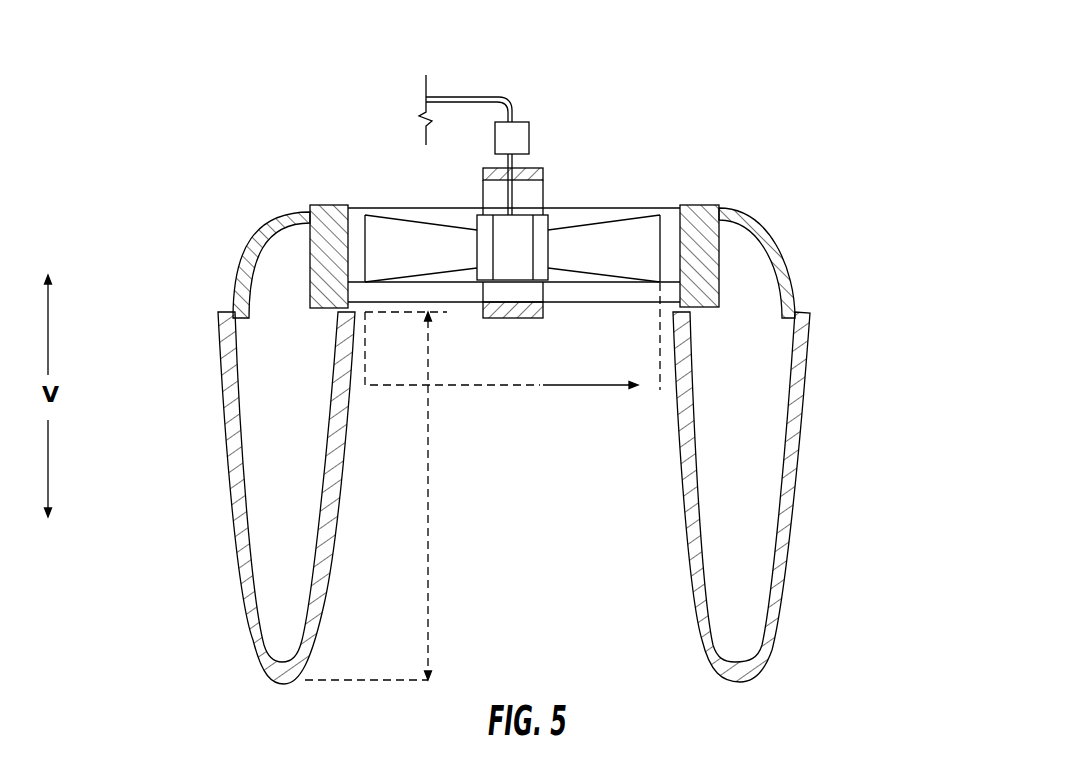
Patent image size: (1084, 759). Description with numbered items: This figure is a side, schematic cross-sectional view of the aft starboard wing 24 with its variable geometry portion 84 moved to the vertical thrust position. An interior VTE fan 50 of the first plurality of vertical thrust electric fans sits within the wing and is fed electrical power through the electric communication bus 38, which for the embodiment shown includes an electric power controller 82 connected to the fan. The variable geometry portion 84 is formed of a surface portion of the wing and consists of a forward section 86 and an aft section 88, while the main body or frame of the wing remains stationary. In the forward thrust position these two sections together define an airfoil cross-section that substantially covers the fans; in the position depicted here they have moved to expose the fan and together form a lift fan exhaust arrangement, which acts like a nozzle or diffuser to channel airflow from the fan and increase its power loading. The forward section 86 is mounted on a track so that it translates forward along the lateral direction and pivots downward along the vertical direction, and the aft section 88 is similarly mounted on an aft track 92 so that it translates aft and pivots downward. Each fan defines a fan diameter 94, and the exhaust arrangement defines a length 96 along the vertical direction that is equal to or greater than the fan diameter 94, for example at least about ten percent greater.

The aft starboard wing 24 is at (749, 154).
The electric communication bus 38 is at (498, 76).
The interior VTE fan 50 is at (637, 206).
The electric power controller 82 is at (520, 135).
The variable geometry portion 84 is at (836, 260).
The forward section 86 is at (222, 428).
The aft section 88 is at (805, 420).
The aft track 92 is at (244, 250).
The fan diameter 94 is at (787, 250).
The length 96 is at (428, 566).